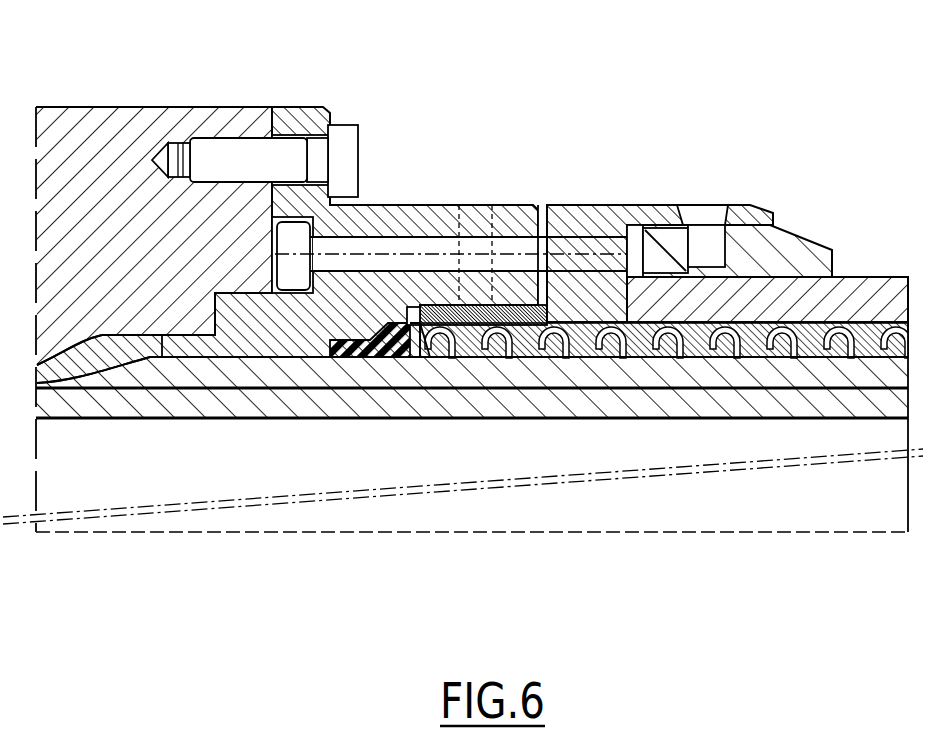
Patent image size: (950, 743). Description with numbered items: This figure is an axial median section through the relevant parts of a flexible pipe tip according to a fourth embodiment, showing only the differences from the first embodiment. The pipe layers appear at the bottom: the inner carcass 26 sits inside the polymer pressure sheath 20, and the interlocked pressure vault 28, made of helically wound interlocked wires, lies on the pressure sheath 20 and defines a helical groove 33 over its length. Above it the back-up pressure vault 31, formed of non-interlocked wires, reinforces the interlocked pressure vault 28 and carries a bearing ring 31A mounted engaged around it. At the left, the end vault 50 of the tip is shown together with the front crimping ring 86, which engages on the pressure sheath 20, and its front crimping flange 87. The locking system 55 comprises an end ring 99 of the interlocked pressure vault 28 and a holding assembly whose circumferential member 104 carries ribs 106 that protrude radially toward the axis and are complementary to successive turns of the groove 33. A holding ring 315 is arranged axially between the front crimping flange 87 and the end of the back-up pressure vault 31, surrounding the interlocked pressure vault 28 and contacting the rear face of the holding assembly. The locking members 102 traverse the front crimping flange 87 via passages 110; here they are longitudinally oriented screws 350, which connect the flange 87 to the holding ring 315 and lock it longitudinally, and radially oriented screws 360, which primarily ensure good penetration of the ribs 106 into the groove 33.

The end vault 50 is at (108, 148).
The front crimping ring 86 is at (72, 372).
The front crimping flange 87 is at (260, 328).
The end ring 99 is at (328, 372).
The passages 110 is at (477, 280).
The longitudinally oriented screws 350 is at (372, 247).
The radially oriented screws 360 is at (503, 277).
The locking members 102 is at (473, 285).
The holding ring 315 is at (583, 215).
The bearing ring 31A is at (778, 267).
The back-up pressure vault 31 is at (845, 308).
The circumferential member 104 is at (600, 328).
The ribs 106 is at (516, 316).
The locking system 55 is at (338, 348).
The helical groove 33 is at (398, 340).
The inner carcass 26 is at (730, 398).
The pressure sheath 20 is at (775, 378).
The interlocked pressure vault 28 is at (876, 368).